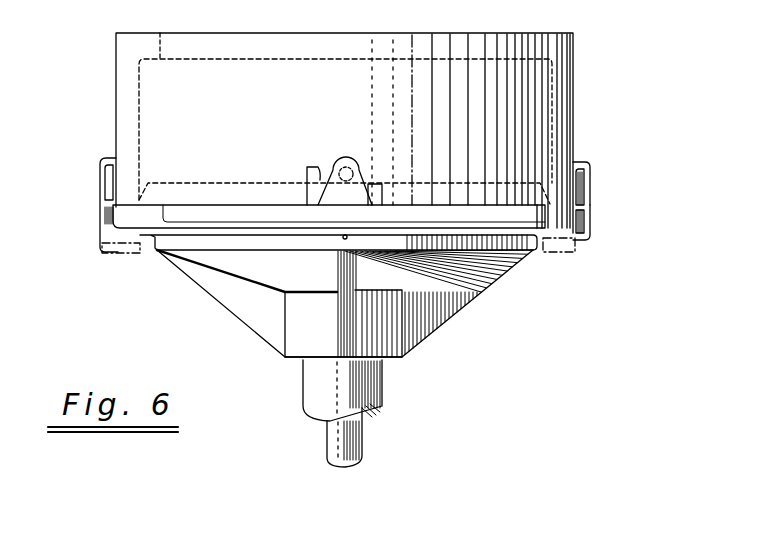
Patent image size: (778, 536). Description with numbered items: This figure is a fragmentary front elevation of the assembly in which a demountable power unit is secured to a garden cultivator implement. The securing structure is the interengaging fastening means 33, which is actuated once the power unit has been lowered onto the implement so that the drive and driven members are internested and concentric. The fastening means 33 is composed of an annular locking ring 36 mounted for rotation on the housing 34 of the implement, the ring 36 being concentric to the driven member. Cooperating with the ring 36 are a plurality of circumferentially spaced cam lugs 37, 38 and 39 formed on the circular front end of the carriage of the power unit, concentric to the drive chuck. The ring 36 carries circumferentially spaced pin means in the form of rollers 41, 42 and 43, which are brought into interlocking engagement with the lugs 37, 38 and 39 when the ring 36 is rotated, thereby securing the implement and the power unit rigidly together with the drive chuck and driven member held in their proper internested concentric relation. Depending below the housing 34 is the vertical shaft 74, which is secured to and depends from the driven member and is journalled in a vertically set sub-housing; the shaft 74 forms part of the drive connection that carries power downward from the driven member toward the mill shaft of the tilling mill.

The fastening means 33 is at (606, 220).
The implement housing 34 is at (464, 311).
The annular locking ring 36 is at (100, 228).
The cam lug 37 is at (580, 183).
The cam lug 38 is at (371, 192).
The cam lug 39 is at (108, 196).
The pin means 41 is at (575, 163).
The pin means 42 is at (343, 160).
The pin means 43 is at (109, 158).
The vertical shaft 74 is at (350, 448).